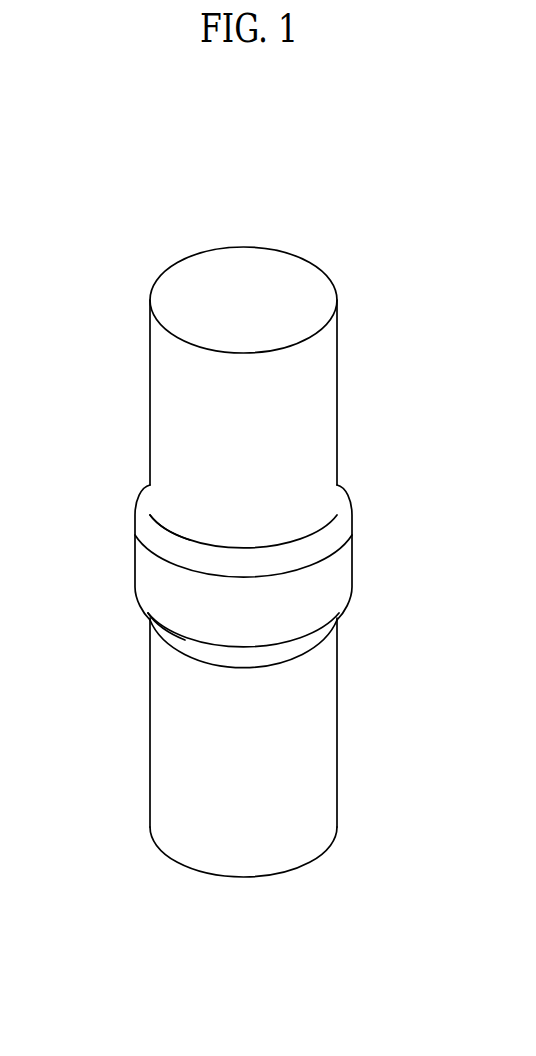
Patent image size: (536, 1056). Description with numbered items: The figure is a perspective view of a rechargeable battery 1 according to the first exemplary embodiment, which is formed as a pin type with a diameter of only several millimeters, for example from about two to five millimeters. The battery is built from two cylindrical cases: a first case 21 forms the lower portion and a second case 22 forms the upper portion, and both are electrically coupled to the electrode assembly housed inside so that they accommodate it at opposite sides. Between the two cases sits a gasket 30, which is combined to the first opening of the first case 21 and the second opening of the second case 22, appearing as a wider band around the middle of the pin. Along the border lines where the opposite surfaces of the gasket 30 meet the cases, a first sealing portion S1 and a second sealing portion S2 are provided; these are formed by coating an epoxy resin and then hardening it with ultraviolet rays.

The rechargeable battery 1 is at (251, 198).
The first case 21 is at (337, 740).
The second case 22 is at (337, 420).
The gasket 30 is at (352, 565).
The first sealing portion S1 is at (173, 648).
The second sealing portion S2 is at (188, 534).